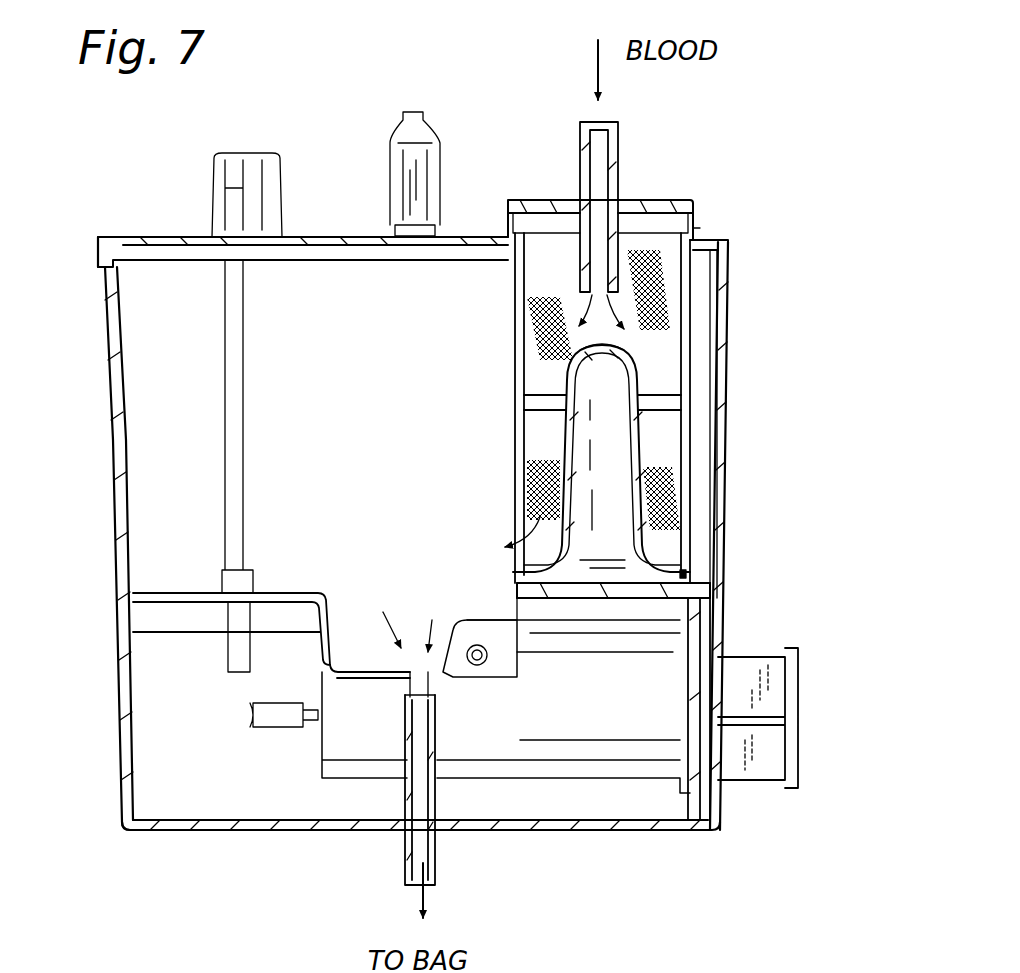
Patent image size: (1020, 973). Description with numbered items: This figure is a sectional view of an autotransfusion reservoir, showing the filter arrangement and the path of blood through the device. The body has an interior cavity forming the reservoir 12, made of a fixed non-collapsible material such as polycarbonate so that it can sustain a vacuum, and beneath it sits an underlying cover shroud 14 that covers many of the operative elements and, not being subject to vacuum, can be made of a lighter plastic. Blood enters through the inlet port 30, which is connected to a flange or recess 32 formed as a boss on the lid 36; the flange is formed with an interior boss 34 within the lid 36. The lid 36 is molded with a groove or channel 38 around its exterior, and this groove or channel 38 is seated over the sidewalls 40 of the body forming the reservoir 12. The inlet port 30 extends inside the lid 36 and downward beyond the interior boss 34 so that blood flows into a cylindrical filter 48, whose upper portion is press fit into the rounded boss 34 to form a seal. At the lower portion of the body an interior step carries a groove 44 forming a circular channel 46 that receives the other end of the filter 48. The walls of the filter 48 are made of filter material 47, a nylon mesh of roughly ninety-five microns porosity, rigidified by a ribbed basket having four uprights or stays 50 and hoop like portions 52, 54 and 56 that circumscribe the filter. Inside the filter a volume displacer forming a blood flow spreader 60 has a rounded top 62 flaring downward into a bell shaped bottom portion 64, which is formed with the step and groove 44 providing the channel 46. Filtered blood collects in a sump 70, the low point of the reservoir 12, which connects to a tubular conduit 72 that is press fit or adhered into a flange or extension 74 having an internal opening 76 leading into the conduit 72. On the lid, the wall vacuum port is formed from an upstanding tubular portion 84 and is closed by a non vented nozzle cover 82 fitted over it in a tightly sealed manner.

The reservoir 12 is at (117, 510).
The underlying cover shroud 14 is at (120, 762).
The inlet port 30 is at (617, 162).
The flange or recess 32 is at (700, 228).
The interior boss 34 is at (677, 207).
The lid 36 is at (328, 236).
The groove or channel 38 is at (728, 243).
The sidewalls 40 is at (722, 382).
The groove 44 is at (710, 587).
The circular channel 46 is at (533, 600).
The filter material 47 is at (533, 340).
The cylindrical filter 48 is at (500, 455).
The uprights or stays 50 is at (517, 330).
The hoop like portion 52 is at (645, 240).
The hoop like portion 54 is at (655, 402).
The hoop like portion 56 is at (683, 577).
The blood flow spreader 60 is at (638, 445).
The rounded top 62 is at (633, 362).
The bell shaped bottom portion 64 is at (557, 558).
The sump 70 is at (335, 610).
The tubular conduit 72 is at (437, 860).
The flange or extension 74 is at (450, 707).
The internal opening 76 is at (410, 683).
The non vented nozzle cover 82 is at (437, 140).
The upstanding tubular portion 84 is at (437, 232).